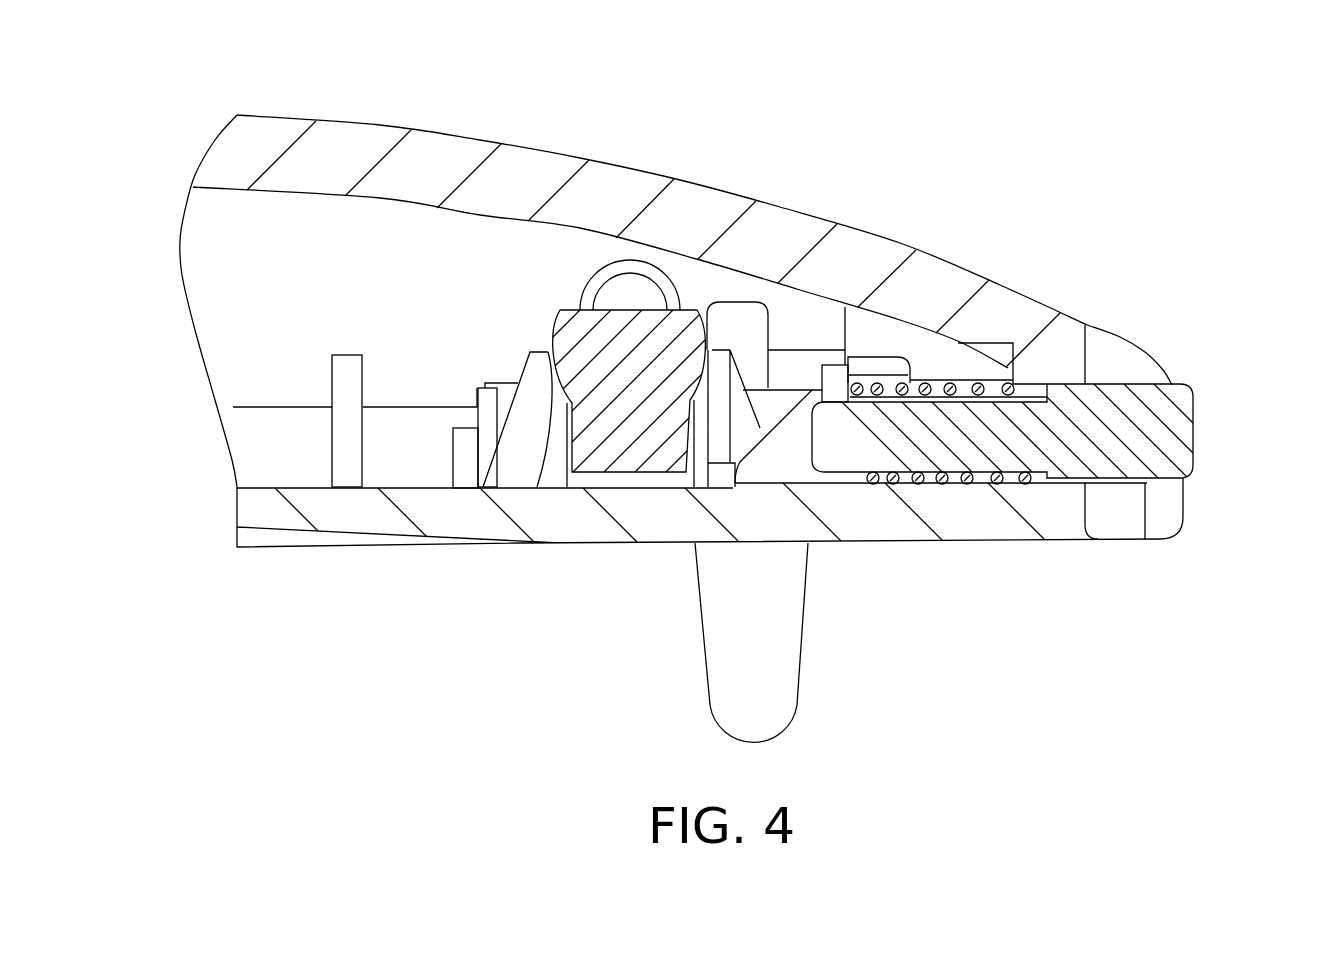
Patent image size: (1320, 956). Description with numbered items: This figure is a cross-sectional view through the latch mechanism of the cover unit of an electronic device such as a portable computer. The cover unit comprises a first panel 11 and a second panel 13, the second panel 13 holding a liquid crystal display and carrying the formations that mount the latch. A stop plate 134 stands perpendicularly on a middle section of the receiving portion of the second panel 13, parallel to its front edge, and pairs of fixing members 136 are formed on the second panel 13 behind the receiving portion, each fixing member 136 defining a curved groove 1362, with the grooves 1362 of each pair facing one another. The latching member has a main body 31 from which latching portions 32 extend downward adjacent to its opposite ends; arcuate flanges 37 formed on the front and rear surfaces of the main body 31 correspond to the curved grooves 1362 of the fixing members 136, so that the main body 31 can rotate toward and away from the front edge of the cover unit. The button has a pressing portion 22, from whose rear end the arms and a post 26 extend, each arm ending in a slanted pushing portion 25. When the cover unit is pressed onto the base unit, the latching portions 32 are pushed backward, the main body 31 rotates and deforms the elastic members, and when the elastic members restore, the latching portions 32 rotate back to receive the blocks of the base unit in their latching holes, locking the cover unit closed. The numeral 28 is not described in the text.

The first panel 11 is at (667, 222).
The second panel 13 is at (372, 507).
The pressing portion 22 is at (1152, 433).
The slanted pushing portion 25 is at (795, 455).
The post 26 is at (930, 445).
The lower spring 28 is at (1028, 481).
The main body 31 is at (628, 423).
The latching portion 32 is at (768, 632).
The arcuate flange 37 is at (552, 330).
The stop plate 134 is at (835, 375).
The fixing member 136 is at (507, 463).
The curved groove 1362 is at (546, 420).